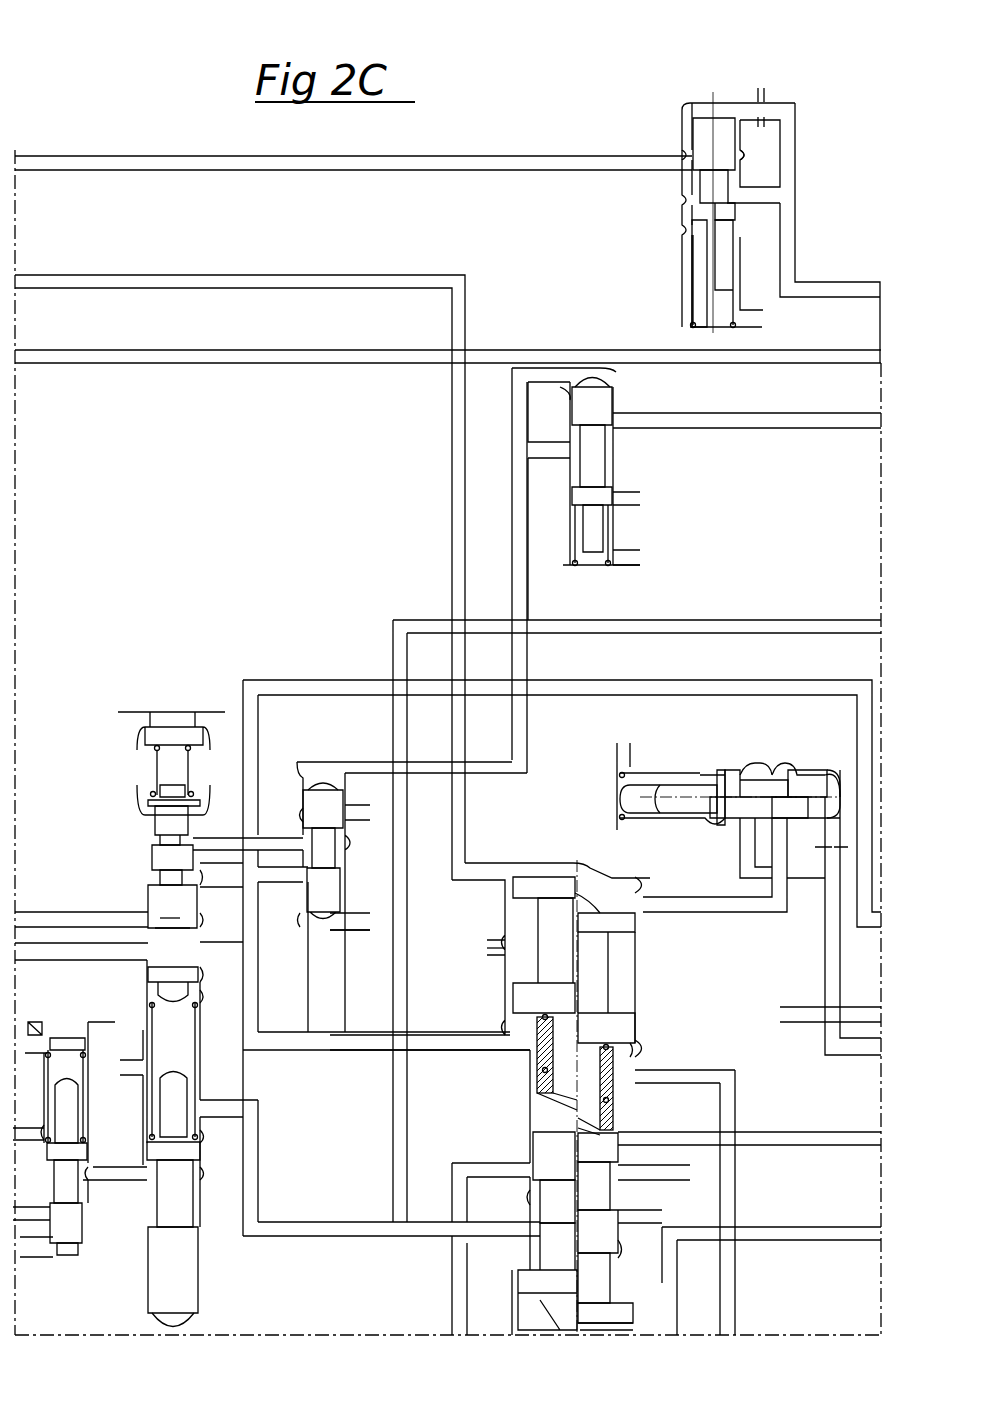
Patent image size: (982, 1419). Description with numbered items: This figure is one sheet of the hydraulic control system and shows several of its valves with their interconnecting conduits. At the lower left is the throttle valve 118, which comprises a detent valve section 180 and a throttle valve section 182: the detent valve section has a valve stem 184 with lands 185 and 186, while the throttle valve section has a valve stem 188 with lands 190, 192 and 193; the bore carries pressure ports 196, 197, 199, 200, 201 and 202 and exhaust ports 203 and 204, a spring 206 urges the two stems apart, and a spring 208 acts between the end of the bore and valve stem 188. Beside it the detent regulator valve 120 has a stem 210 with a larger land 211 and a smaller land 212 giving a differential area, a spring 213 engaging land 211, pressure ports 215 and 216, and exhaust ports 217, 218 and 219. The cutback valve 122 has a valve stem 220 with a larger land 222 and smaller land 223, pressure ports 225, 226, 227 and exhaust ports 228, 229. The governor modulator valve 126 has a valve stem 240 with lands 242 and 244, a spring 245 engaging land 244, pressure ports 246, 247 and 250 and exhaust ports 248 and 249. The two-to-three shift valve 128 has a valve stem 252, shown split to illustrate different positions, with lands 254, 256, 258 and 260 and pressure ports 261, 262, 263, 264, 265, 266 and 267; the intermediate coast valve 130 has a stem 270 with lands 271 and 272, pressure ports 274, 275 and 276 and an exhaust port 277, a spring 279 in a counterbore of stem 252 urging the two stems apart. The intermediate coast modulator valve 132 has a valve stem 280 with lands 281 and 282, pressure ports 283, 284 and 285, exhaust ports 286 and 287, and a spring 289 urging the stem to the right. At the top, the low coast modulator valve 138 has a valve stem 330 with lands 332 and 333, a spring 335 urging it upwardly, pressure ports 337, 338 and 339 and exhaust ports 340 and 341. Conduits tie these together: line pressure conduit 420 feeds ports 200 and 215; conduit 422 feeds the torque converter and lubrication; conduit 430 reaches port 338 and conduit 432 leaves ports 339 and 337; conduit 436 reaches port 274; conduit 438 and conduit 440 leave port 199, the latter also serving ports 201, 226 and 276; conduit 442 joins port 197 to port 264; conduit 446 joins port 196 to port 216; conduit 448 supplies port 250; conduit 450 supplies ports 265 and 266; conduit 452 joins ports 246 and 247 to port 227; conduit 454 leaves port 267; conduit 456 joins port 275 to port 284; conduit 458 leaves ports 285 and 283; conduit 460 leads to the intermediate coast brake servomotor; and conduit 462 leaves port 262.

The throttle valve 118 is at (215, 1259).
The detent regulator valve 120 is at (47, 1277).
The cutback valve 122 is at (294, 947).
The governor modulator valve 126 is at (626, 413).
The 2:3 shift valve 128 is at (513, 1153).
The intermediate coast valve 130 is at (700, 957).
The intermediate coast modulator valve 132 is at (765, 741).
The low coast modulator valve 138 is at (670, 250).
The detent valve section 180 is at (203, 1231).
The throttle valve section 182 is at (139, 903).
The valve stem 184 is at (196, 1098).
The land 185 is at (196, 1295).
The land 186 is at (200, 1155).
The valve stem 188 is at (144, 858).
The land 190 is at (145, 978).
The land 192 is at (140, 868).
The land 193 is at (155, 830).
The pressure port 196 is at (208, 1178).
The pressure port 197 is at (205, 1118).
The pressure port 199 is at (210, 970).
The pressure port 200 is at (205, 918).
The pressure port 201 is at (205, 880).
The pressure port 202 is at (193, 840).
The exhaust port 203 is at (143, 990).
The exhaust port 204 is at (143, 1068).
The spring 206 is at (208, 993).
The spring 208 is at (146, 760).
The valve stem 210 is at (84, 1111).
The land 211 is at (47, 1152).
The land 212 is at (90, 1235).
The spring 213 is at (45, 1083).
The pressure port 215 is at (90, 1207).
The pressure port 216 is at (88, 1190).
The exhaust port 217 is at (30, 1138).
The exhaust port 218 is at (92, 1257).
The exhaust port 219 is at (42, 1025).
The valve stem 220 is at (296, 803).
The land 222 is at (338, 808).
The land 223 is at (340, 895).
The pressure port 225 is at (298, 840).
The pressure port 226 is at (305, 885).
The pressure port 227 is at (348, 762).
The exhaust port 228 is at (350, 930).
The exhaust port 229 is at (362, 832).
The valve stem 240 is at (618, 392).
The land 242 is at (570, 425).
The land 244 is at (575, 512).
The spring 245 is at (570, 567).
The pressure port 246 is at (572, 460).
The pressure port 247 is at (575, 385).
The exhaust port 248 is at (618, 492).
The exhaust port 249 is at (618, 550).
The pressure port 250 is at (618, 428).
The valve stem 252 is at (628, 1110).
The land 254 is at (646, 1046).
The land 256 is at (612, 1152).
The land 258 is at (618, 1212).
The land 260 is at (518, 1283).
The pressure port 261 is at (525, 1078).
The pressure port 262 is at (525, 1142).
The pressure port 263 is at (525, 1200).
The pressure port 264 is at (618, 1243).
The pressure port 265 is at (640, 1296).
The pressure port 266 is at (635, 1325).
The pressure port 267 is at (635, 1178).
The valve stem 270 is at (596, 889).
The land 271 is at (637, 924).
The land 272 is at (636, 1028).
The pressure port 274 is at (512, 863).
The pressure port 275 is at (643, 897).
The pressure port 276 is at (505, 1050).
The exhaust port 277 is at (490, 936).
The spring 279 is at (558, 1017).
The valve stem 280 is at (800, 770).
The land 281 is at (732, 772).
The land 282 is at (812, 768).
The pressure port 283 is at (745, 840).
The pressure port 284 is at (815, 840).
The pressure port 285 is at (834, 768).
The exhaust port 286 is at (618, 773).
The exhaust port 287 is at (718, 773).
The spring 289 is at (618, 818).
The valve stem 330 is at (729, 94).
The land 332 is at (738, 138).
The land 333 is at (727, 208).
The spring 335 is at (688, 327).
The pressure port 337 is at (738, 103).
The pressure port 338 is at (682, 158).
The pressure port 339 is at (740, 192).
The exhaust port 340 is at (750, 228).
The exhaust port 341 is at (752, 321).
The conduit 420 is at (34, 912).
The conduit 422 is at (95, 350).
The conduit 430 is at (92, 156).
The conduit 432 is at (838, 282).
The conduit 436 is at (92, 275).
The conduit 438 is at (68, 962).
The conduit 440 is at (290, 680).
The conduit 442 is at (758, 620).
The conduit 446 is at (108, 1167).
The conduit 448 is at (805, 430).
The conduit 450 is at (803, 1227).
The conduit 452 is at (512, 525).
The conduit 454 is at (452, 1300).
The conduit 456 is at (758, 912).
The conduit 458 is at (855, 1055).
The conduit 460 is at (812, 1022).
The conduit 462 is at (806, 1132).